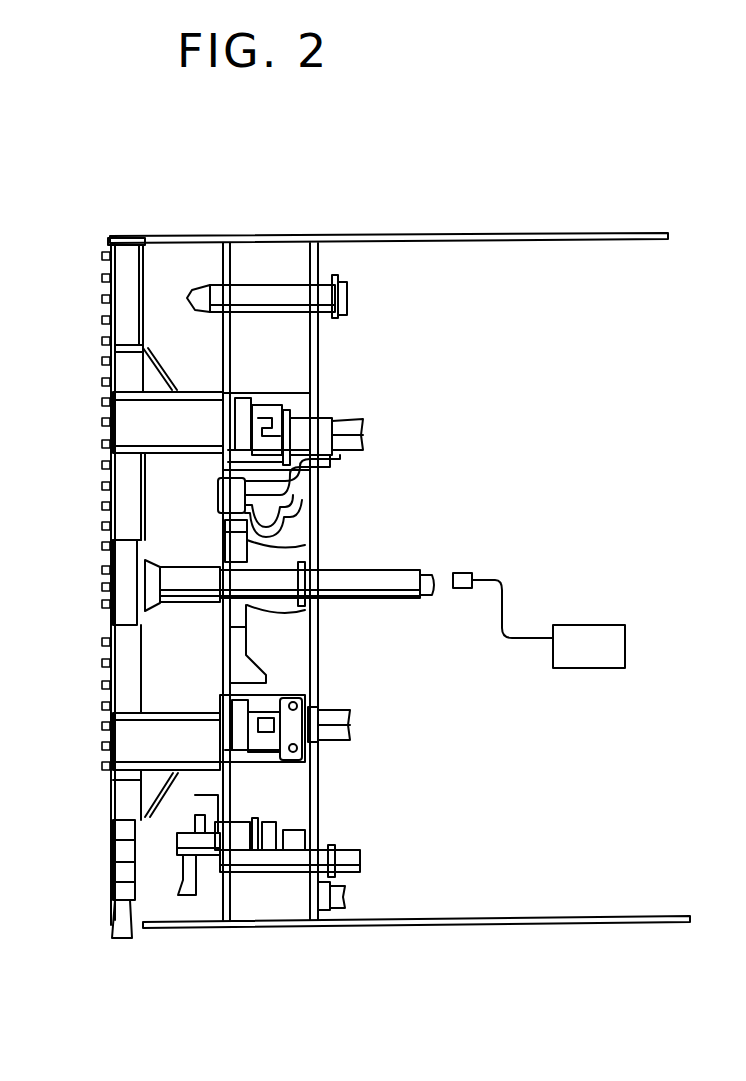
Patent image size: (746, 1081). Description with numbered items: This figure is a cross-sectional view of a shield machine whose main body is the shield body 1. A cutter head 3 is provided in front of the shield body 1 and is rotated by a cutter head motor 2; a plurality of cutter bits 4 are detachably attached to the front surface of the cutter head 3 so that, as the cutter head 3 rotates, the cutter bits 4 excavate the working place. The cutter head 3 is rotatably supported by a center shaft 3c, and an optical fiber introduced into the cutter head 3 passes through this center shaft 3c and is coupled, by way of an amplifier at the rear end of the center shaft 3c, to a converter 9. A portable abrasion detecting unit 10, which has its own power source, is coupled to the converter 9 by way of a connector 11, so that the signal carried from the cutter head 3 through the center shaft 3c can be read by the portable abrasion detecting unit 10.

The shield body 1 is at (440, 234).
The cutter head motor 2 is at (356, 430).
The cutter head 3 is at (124, 250).
The center shaft 3c is at (382, 575).
The cutter bits 4 is at (100, 382).
The converter 9 is at (428, 598).
The portable abrasion detecting unit 10 is at (613, 663).
The connector 11 is at (466, 573).